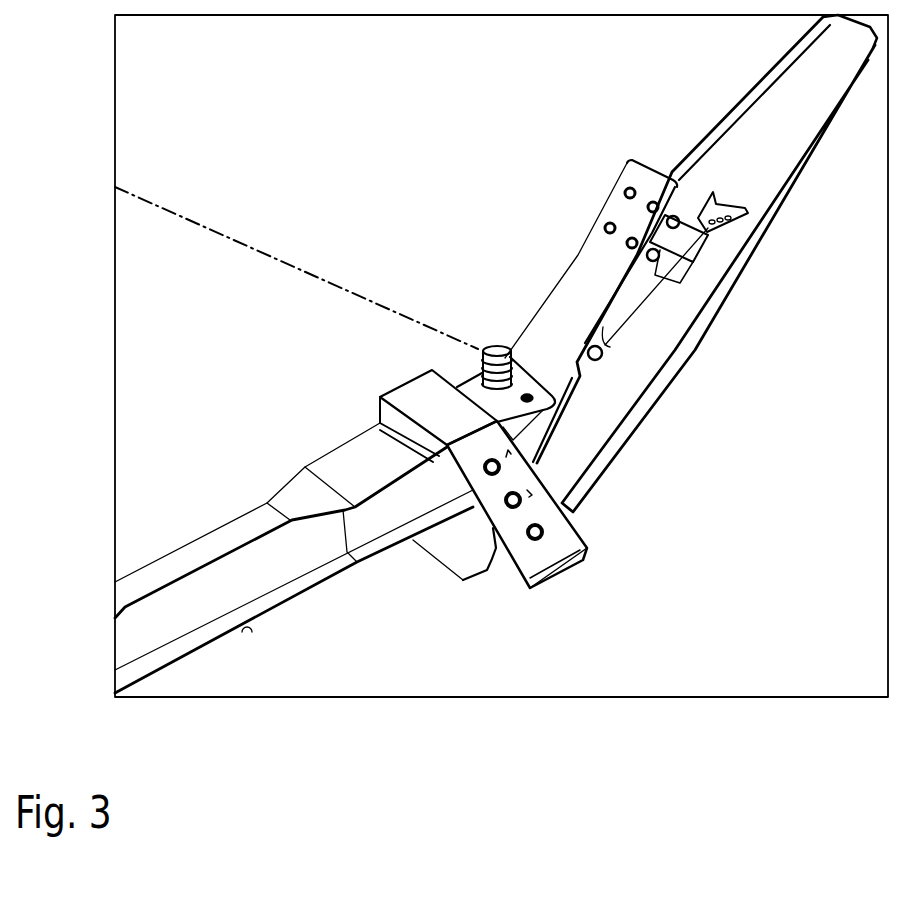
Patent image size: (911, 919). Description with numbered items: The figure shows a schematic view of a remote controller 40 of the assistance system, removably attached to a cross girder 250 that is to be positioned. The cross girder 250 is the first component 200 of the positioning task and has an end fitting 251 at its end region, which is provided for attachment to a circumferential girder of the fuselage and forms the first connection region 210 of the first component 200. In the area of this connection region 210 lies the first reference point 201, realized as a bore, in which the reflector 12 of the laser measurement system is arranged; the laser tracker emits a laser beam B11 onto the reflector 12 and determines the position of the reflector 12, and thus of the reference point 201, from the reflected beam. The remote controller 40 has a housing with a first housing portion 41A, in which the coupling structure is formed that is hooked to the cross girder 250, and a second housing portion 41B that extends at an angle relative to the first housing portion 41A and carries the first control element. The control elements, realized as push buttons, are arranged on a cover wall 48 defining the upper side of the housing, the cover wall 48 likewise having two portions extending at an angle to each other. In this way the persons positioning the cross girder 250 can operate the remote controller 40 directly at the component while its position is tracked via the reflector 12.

The laser beam B11 is at (207, 228).
The remote controller 40 is at (388, 363).
The first housing portion 41A is at (408, 410).
The second housing portion 41B is at (497, 530).
The cover wall 48 is at (437, 385).
The reflector 12 is at (490, 347).
The first reference point 201 is at (500, 341).
The first component 200 is at (168, 613).
The cross girder 250 is at (305, 558).
The end fitting 251 is at (655, 387).
The first connection region 210 is at (665, 237).